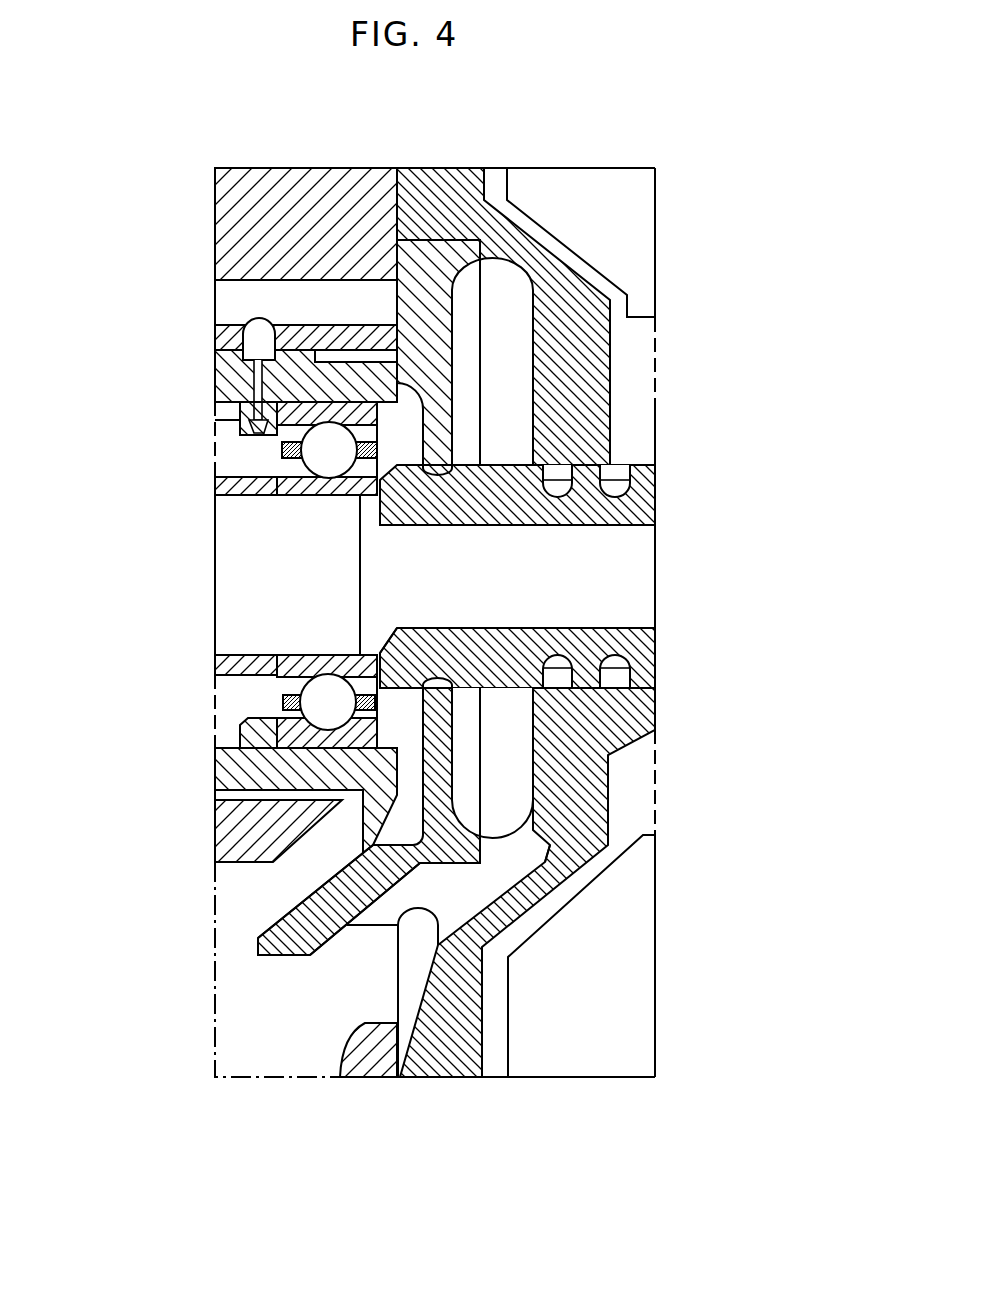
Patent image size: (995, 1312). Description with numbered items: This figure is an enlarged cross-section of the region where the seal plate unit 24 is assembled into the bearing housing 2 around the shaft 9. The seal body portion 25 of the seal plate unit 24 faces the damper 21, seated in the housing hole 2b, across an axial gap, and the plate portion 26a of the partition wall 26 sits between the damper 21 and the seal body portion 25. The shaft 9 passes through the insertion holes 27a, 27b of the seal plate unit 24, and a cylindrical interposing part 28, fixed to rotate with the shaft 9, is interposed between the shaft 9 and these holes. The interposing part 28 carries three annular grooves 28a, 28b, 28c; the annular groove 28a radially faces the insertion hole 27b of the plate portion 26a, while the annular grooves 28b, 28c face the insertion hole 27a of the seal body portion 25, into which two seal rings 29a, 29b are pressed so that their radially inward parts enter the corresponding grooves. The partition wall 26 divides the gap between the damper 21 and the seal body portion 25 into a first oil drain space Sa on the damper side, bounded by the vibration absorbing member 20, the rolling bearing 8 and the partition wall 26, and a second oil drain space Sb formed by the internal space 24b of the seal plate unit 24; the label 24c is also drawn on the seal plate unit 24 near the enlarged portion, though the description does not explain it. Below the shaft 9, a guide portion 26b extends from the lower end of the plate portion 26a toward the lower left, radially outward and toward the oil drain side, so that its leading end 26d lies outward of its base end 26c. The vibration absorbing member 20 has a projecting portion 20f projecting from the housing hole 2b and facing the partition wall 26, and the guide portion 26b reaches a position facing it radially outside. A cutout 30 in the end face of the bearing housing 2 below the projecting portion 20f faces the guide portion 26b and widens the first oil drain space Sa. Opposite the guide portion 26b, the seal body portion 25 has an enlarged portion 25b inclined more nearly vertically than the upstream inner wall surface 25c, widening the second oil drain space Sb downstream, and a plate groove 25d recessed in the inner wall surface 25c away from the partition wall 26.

The bearing housing 2 is at (215, 243).
The housing hole 2b is at (328, 355).
The rolling bearing 8 is at (300, 456).
The shaft 9 is at (307, 580).
The vibration absorbing member 20 is at (215, 368).
The projecting portion 20f is at (275, 790).
The damper 21 is at (352, 360).
The seal plate unit 24 is at (593, 282).
The internal space 24b is at (453, 883).
The drain passage 24c is at (405, 1054).
The seal body portion 25 is at (620, 340).
The enlarged portion 25b is at (413, 990).
The inner wall surface 25c is at (470, 910).
The plate groove 25d is at (548, 850).
The partition wall 26 is at (458, 240).
The plate portion 26a is at (418, 722).
The guide portion 26b is at (300, 912).
The base end 26c is at (335, 865).
The leading end 26d is at (258, 945).
The insertion hole 27a is at (655, 640).
The insertion hole 27b is at (400, 635).
The interposing part 28 is at (655, 500).
The annular groove 28a is at (262, 428).
The annular groove 28b is at (557, 478).
The annular groove 28c is at (615, 478).
The seal ring 29a is at (557, 668).
The seal ring 29b is at (615, 667).
The cutout 30 is at (312, 834).
The first oil drain space Sa is at (362, 845).
The second oil drain space Sb is at (497, 903).